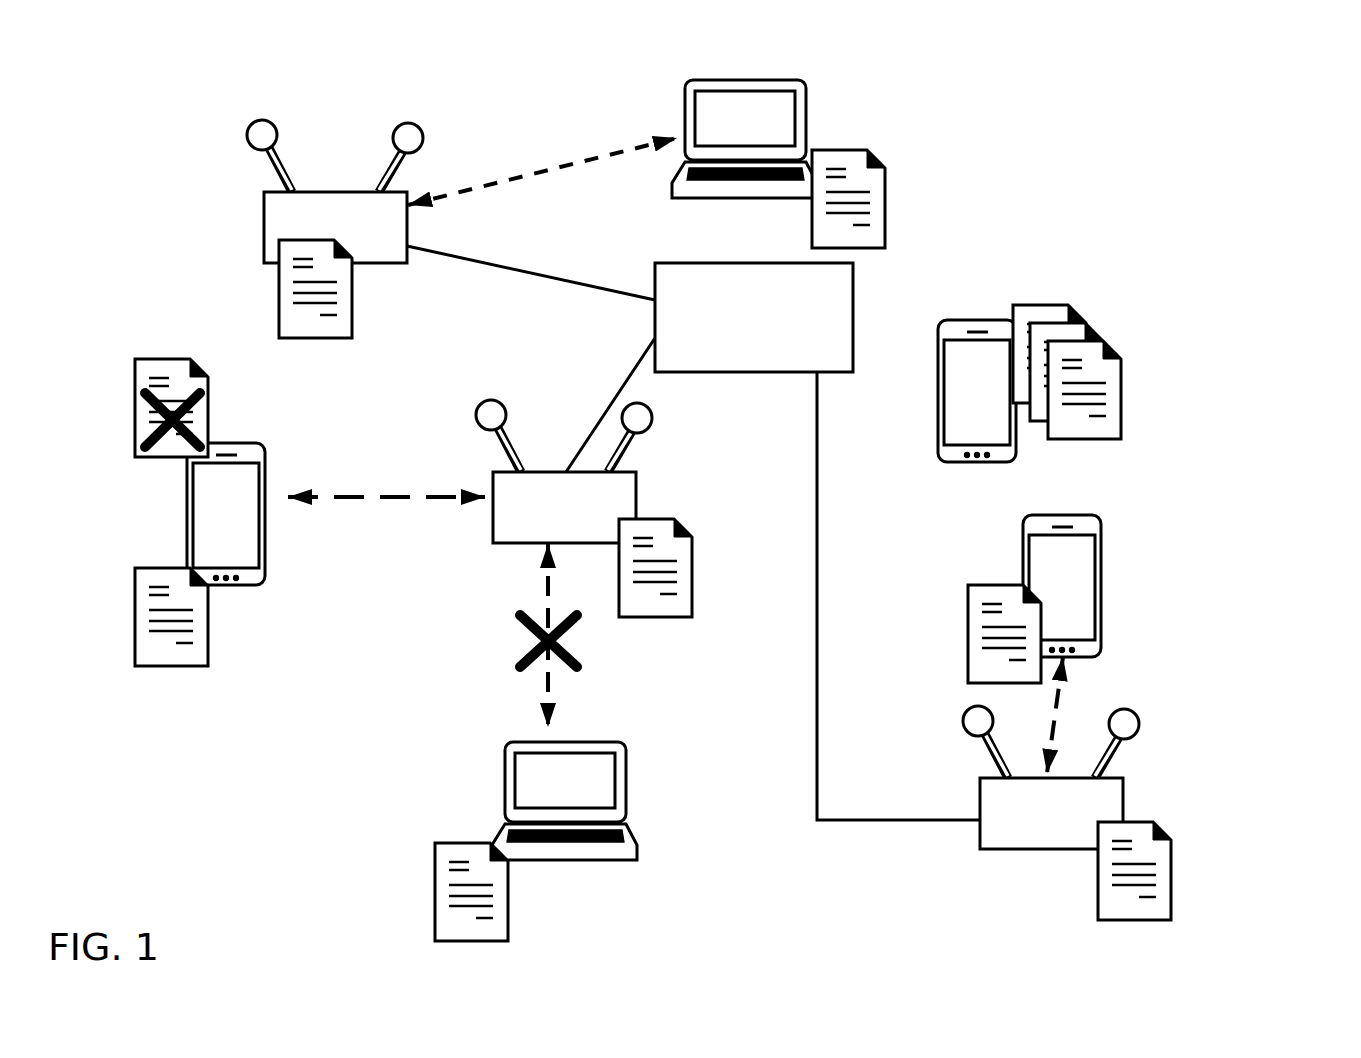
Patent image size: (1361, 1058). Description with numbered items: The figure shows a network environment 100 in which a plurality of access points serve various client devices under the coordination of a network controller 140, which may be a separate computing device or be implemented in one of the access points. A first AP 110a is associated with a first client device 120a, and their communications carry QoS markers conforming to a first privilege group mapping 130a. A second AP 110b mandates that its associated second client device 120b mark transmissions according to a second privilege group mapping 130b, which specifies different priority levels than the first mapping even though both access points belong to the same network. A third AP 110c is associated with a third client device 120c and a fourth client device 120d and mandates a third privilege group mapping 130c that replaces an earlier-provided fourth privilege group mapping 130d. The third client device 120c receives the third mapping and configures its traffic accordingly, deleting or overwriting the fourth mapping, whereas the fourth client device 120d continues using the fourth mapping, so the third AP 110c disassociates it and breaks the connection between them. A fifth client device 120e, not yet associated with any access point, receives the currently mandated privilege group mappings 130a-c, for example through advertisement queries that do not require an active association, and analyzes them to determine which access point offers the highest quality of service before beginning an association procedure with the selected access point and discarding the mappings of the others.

The network environment 100 is at (1263, 138).
The first AP 110a is at (264, 226).
The second AP 110b is at (1119, 801).
The third AP 110c is at (655, 417).
The first client device 120a is at (806, 118).
The second client device 120b is at (1101, 573).
The third client device 120c is at (187, 524).
The fourth client device 120d is at (505, 780).
The fifth client device 120e is at (958, 320).
The first privilege group mapping 130a is at (352, 288).
The second privilege group mapping 130b is at (968, 648).
The third privilege group mapping 130c is at (692, 578).
The fourth privilege group mapping 130d is at (208, 420).
The privilege group mappings 130a-c is at (1122, 397).
The network controller 140 is at (737, 357).